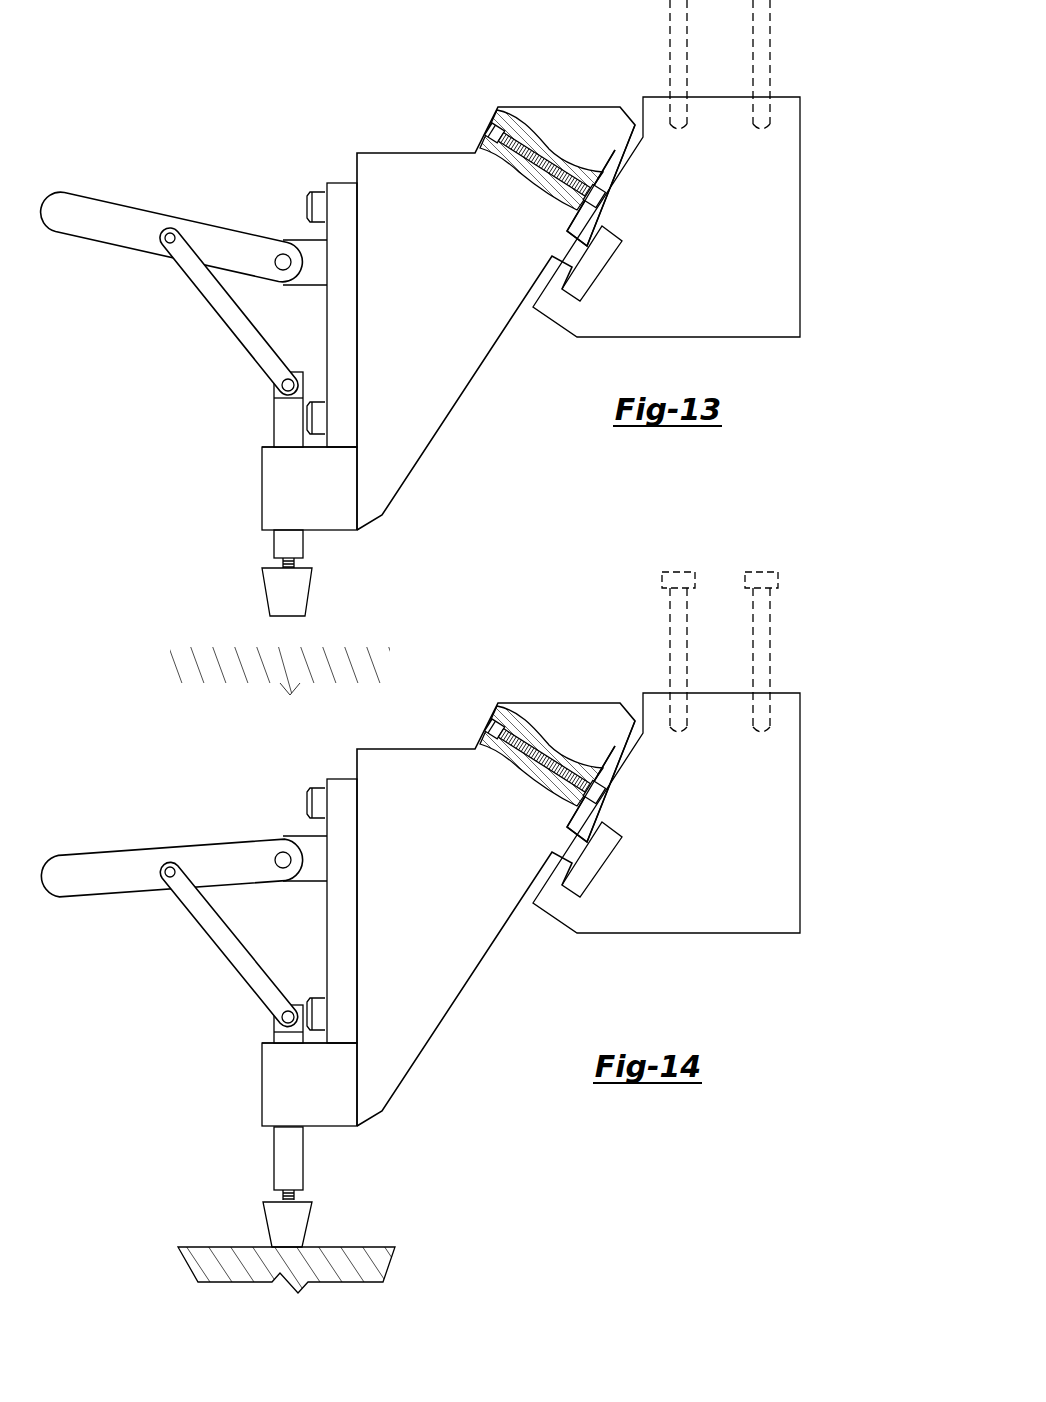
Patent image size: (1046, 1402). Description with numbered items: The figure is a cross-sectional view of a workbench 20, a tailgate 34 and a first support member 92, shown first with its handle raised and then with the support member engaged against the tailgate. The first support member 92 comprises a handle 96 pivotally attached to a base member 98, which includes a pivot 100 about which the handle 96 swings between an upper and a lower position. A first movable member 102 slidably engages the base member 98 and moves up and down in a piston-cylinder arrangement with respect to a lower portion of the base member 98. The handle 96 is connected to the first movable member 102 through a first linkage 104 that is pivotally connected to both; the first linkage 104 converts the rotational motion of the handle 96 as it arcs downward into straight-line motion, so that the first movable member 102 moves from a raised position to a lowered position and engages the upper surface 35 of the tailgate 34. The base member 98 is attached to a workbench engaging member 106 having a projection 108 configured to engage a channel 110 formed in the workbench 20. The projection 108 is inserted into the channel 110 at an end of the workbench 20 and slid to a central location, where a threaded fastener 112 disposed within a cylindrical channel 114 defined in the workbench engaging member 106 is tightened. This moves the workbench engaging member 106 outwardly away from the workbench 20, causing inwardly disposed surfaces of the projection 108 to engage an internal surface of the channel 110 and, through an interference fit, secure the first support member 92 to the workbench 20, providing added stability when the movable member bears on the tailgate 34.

In FIG. 13, the workbench 20 is at (570, 47).
In FIG. 14, the workbench 20 is at (666, 752).
In FIG. 13, the tailgate 34 is at (190, 670).
In FIG. 14, the tailgate 34 is at (190, 1266).
In FIG. 13, the upper surface 35 is at (333, 645).
In FIG. 14, the upper surface 35 is at (328, 1245).
In FIG. 13, the first support member 92 is at (186, 395).
In FIG. 14, the first support member 92 is at (186, 990).
In FIG. 13, the handle 96 is at (160, 210).
In FIG. 14, the handle 96 is at (135, 855).
In FIG. 13, the base member 98 is at (340, 183).
In FIG. 14, the base member 98 is at (309, 914).
In FIG. 13, the pivot 100 is at (284, 254).
In FIG. 14, the pivot 100 is at (284, 852).
In FIG. 13, the first movable member 102 is at (274, 414).
In FIG. 14, the first movable member 102 is at (274, 1160).
In FIG. 13, the first linkage 104 is at (210, 309).
In FIG. 14, the first linkage 104 is at (205, 906).
In FIG. 13, the workbench engaging member 106 is at (388, 152).
In FIG. 14, the workbench engaging member 106 is at (496, 894).
In FIG. 13, the projection 108 is at (562, 246).
In FIG. 14, the projection 108 is at (556, 781).
In FIG. 13, the channel 110 is at (622, 229).
In FIG. 14, the channel 110 is at (633, 859).
In FIG. 13, the threaded fastener 112 is at (533, 166).
In FIG. 14, the threaded fastener 112 is at (514, 753).
In FIG. 13, the cylindrical channel 114 is at (540, 157).
In FIG. 14, the cylindrical channel 114 is at (547, 757).